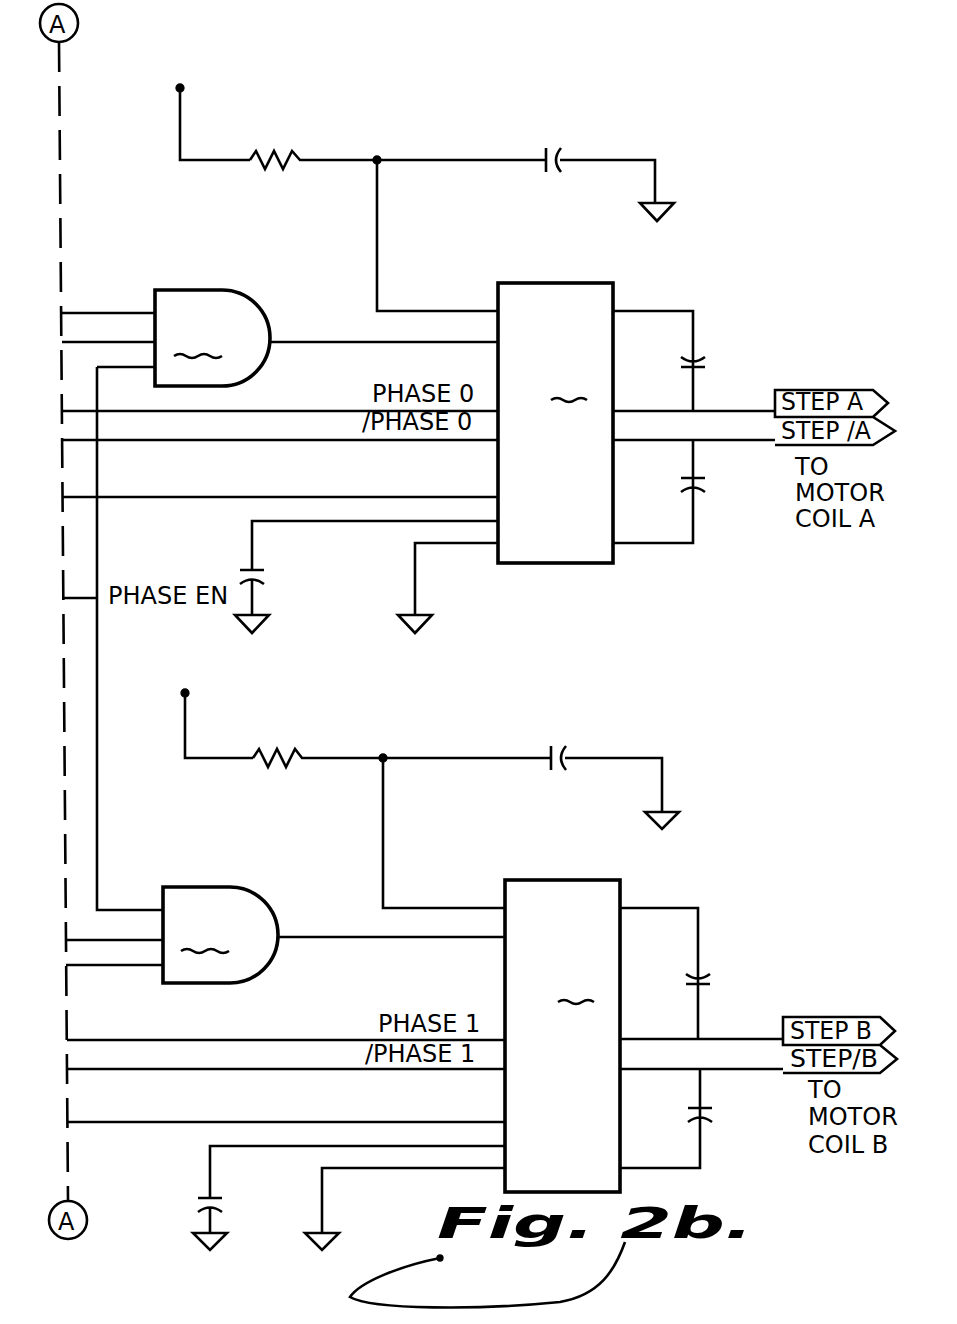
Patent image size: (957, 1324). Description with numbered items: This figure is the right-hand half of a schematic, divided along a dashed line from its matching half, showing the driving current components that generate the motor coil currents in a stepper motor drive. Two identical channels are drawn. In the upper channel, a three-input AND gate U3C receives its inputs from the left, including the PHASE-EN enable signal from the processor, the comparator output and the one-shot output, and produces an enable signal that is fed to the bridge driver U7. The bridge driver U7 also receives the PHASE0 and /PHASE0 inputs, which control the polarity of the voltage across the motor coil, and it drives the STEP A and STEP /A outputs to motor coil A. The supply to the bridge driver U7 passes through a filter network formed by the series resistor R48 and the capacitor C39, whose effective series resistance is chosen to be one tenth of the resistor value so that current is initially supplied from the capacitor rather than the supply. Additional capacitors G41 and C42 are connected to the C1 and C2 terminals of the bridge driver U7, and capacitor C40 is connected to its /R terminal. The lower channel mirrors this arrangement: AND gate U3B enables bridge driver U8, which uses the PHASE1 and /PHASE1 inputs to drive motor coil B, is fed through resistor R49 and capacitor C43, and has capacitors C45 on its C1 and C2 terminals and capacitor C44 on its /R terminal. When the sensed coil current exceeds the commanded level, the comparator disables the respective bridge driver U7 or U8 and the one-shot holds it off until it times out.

The resistor R48 is at (276, 126).
The capacitor C39 is at (525, 169).
The AND gate U3C is at (280, 316).
The bridge driver U7 is at (555, 402).
The capacitor C41 G41 is at (690, 361).
The capacitor C42 is at (689, 491).
The capacitor C40 is at (366, 577).
The resistor R49 is at (282, 728).
The capacitor C43 is at (531, 772).
The AND gate U3B is at (285, 914).
The bridge driver U8 is at (562, 1016).
The capacitor C45 is at (697, 1038).
The capacitor C44 is at (349, 1198).